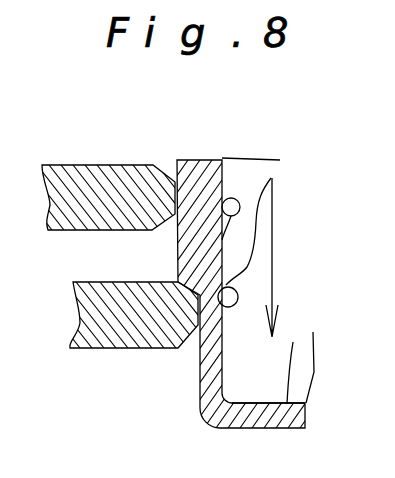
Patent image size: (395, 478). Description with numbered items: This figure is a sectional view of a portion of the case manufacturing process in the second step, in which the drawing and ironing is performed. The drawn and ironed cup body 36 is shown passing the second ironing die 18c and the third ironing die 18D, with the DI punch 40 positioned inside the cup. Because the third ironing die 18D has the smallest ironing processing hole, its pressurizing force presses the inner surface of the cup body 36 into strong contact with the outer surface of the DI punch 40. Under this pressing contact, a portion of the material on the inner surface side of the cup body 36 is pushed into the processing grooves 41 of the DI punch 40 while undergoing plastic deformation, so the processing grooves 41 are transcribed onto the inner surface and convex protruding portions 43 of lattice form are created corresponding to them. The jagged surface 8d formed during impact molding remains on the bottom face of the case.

The second ironing die 18c is at (97, 178).
The third ironing die 18D is at (131, 323).
The processing grooves 41 is at (221, 203).
The drawn and ironed cup body 36 is at (204, 410).
The DI punch 40 is at (242, 248).
The convex protruding portions 43 is at (236, 300).
The jagged surface 8d is at (293, 342).